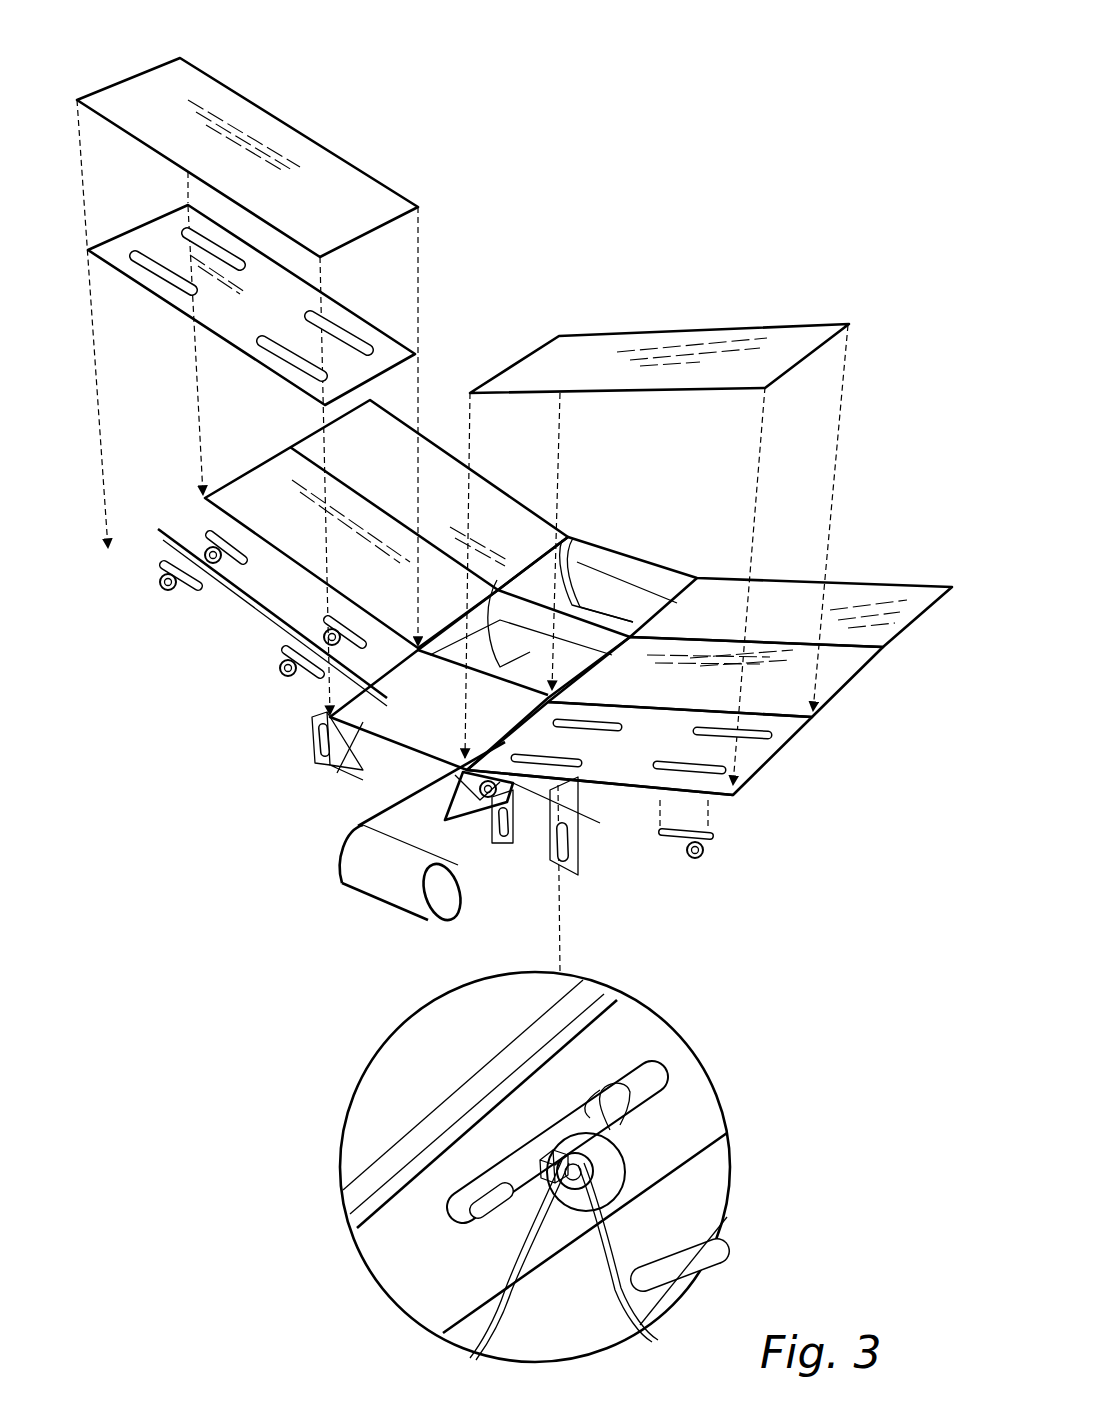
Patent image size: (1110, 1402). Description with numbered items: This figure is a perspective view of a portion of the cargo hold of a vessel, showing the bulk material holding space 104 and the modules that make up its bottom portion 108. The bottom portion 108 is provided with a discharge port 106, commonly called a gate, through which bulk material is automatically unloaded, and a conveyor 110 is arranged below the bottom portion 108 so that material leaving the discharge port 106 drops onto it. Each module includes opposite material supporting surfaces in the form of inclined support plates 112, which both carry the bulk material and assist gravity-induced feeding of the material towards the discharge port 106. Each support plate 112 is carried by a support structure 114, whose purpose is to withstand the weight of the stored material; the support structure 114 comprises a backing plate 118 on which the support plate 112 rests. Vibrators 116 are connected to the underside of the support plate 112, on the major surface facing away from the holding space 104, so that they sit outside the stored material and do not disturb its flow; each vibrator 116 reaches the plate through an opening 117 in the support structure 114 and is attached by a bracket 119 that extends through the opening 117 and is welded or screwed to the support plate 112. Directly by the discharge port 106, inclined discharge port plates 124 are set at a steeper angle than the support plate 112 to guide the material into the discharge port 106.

The bulk material holding space 104 is at (484, 442).
The discharge port 106 is at (367, 820).
The bottom portion 108 is at (488, 493).
The conveyor 110 is at (392, 873).
The support plate 112 is at (157, 103).
The support structure 114 is at (316, 712).
The vibrator 116 is at (178, 595).
The opening 117 is at (222, 252).
The backing plate 118 is at (387, 357).
The bracket 119 is at (543, 1160).
The discharge port plate 124 is at (543, 580).